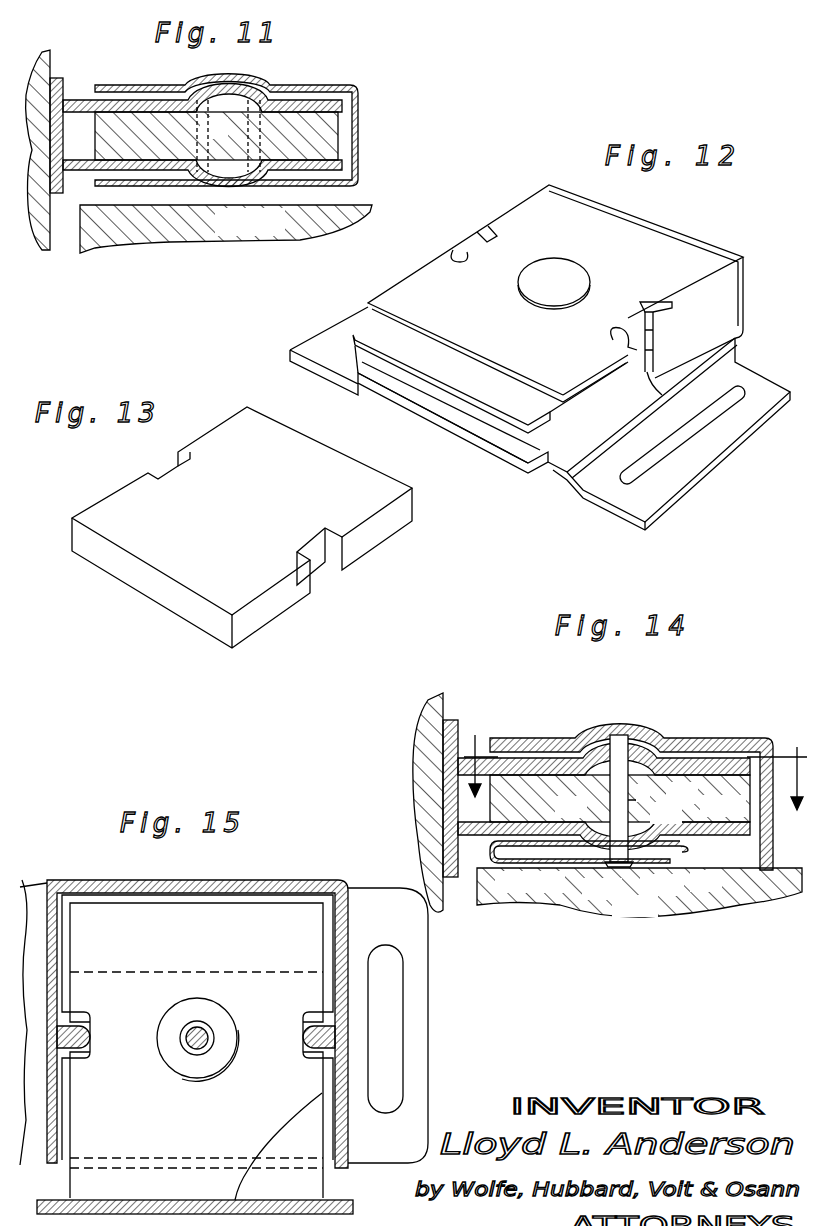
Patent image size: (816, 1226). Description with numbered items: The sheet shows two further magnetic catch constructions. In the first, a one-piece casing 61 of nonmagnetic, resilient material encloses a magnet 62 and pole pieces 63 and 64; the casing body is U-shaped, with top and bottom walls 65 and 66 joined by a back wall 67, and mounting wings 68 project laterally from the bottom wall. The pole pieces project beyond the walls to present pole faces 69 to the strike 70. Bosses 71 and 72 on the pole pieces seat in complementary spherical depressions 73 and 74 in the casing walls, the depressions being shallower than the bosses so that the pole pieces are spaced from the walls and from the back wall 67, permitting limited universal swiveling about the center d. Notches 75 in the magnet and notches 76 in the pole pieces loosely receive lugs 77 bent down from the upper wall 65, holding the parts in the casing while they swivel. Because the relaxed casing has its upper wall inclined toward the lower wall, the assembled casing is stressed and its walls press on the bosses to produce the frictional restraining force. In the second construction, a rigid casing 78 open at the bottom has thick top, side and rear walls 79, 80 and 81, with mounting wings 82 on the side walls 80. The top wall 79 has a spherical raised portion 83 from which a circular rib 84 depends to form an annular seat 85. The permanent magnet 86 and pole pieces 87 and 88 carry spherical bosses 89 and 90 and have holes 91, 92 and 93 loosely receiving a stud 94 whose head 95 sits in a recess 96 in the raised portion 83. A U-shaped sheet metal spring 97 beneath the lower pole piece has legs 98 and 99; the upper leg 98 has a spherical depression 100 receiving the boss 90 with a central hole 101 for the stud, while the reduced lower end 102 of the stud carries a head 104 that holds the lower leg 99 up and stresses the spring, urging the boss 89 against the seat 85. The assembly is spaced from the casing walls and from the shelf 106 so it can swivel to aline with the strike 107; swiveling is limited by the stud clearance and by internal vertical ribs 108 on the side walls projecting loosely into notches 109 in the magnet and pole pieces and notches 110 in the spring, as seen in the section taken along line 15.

In FIG. 14, the section line 15 is at (638, 756).
In FIG. 11, the casing 61 is at (352, 86).
In FIG. 12, the casing 61 is at (672, 232).
In FIG. 11, the magnet 62 is at (335, 135).
In FIG. 12, the magnet 62 is at (712, 296).
In FIG. 13, the magnet 62 is at (130, 487).
In FIG. 11, the pole piece 63 is at (90, 99).
In FIG. 12, the pole piece 63 is at (488, 376).
In FIG. 11, the pole piece 64 is at (345, 166).
In FIG. 12, the pole piece 64 is at (482, 445).
In FIG. 11, the top wall 65 is at (150, 85).
In FIG. 12, the top wall 65 is at (392, 292).
In FIG. 11, the bottom wall 66 is at (140, 186).
In FIG. 11, the back wall 67 is at (358, 110).
In FIG. 12, the back wall 67 is at (744, 290).
In FIG. 12, the mounting wings 68 is at (325, 330).
In FIG. 12, the pole faces 69 is at (420, 380).
In FIG. 11, the strike 70 is at (60, 78).
In FIG. 11, the boss 71 is at (258, 90).
In FIG. 11, the boss 72 is at (258, 198).
In FIG. 12, the spherical depression 73 is at (546, 266).
In FIG. 11, the spherical depression 74 is at (228, 196).
In FIG. 12, the notches 75 is at (653, 342).
In FIG. 13, the notches 75 is at (160, 472).
In FIG. 12, the notches 76 is at (660, 302).
In FIG. 11, the lugs 77 is at (230, 135).
In FIG. 12, the lugs 77 is at (626, 350).
In FIG. 14, the casing 78 is at (735, 738).
In FIG. 15, the casing 78 is at (300, 880).
In FIG. 14, the top wall 79 is at (705, 739).
In FIG. 14, the side walls 80 is at (690, 870).
In FIG. 15, the side walls 80 is at (60, 942).
In FIG. 14, the rear wall 81 is at (774, 832).
In FIG. 15, the rear wall 81 is at (201, 880).
In FIG. 15, the mounting wings 82 is at (430, 1004).
In FIG. 14, the spherical raised portion 83 is at (655, 735).
In FIG. 14, the circular rib 84 is at (578, 752).
In FIG. 14, the annular seat 85 is at (604, 772).
In FIG. 14, the permanent magnet 86 is at (522, 780).
In FIG. 14, the pole piece 87 is at (512, 756).
In FIG. 14, the pole piece 88 is at (475, 836).
In FIG. 14, the spherical boss 89 is at (609, 745).
In FIG. 15, the spherical boss 89 is at (220, 1060).
In FIG. 14, the spherical boss 90 is at (593, 822).
In FIG. 14, the hole 91 is at (655, 792).
In FIG. 14, the hole 92 is at (612, 735).
In FIG. 15, the hole 92 is at (188, 1028).
In FIG. 14, the hole 93 is at (666, 812).
In FIG. 14, the stud 94 is at (664, 740).
In FIG. 15, the stud 94 is at (206, 1030).
In FIG. 14, the head 95 is at (618, 730).
In FIG. 14, the recess 96 is at (628, 735).
In FIG. 14, the spring 97 is at (566, 864).
In FIG. 15, the spring 97 is at (328, 1170).
In FIG. 14, the upper leg 98 is at (690, 846).
In FIG. 14, the lower leg 99 is at (528, 863).
In FIG. 14, the spherical depression 100 is at (722, 805).
In FIG. 14, the hole 101 is at (634, 865).
In FIG. 14, the reduced portion 102 is at (612, 867).
In FIG. 14, the head 104 is at (622, 868).
In FIG. 14, the shelf 106 is at (684, 912).
In FIG. 14, the strike 107 is at (436, 771).
In FIG. 15, the internal vertical ribs 108 is at (303, 1024).
In FIG. 15, the notches 109 is at (90, 1030).
In FIG. 15, the notches 110 is at (84, 1021).